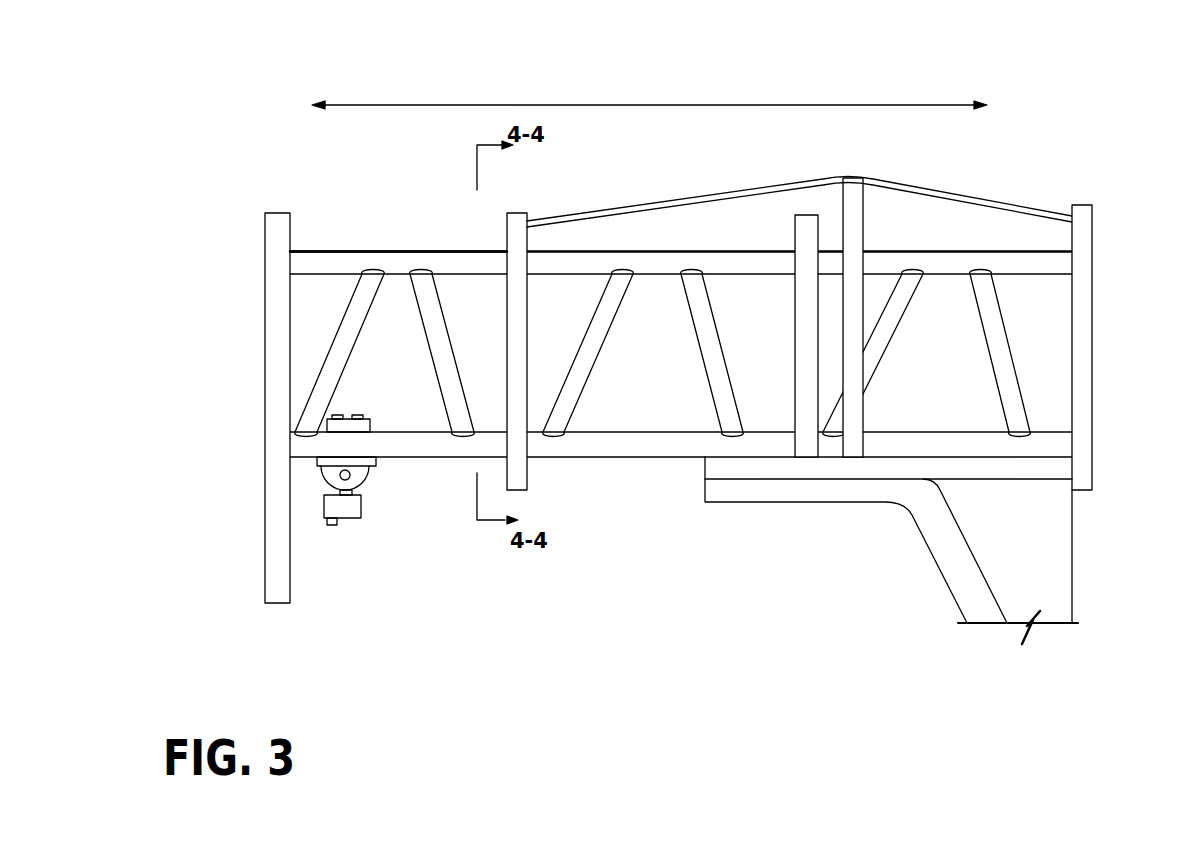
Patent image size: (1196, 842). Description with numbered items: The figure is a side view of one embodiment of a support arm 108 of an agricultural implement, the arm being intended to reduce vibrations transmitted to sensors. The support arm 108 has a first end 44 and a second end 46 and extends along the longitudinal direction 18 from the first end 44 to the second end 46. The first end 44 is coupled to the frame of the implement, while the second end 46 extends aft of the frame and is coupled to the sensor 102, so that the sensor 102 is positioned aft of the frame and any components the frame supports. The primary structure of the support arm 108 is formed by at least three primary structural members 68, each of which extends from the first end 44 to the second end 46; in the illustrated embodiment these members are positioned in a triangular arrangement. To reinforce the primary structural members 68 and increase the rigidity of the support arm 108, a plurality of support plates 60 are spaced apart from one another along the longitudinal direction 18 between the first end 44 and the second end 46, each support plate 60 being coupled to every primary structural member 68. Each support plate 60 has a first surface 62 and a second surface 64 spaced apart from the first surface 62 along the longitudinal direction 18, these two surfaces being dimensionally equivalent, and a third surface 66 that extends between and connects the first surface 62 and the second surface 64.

The support arm 108 is at (238, 105).
The longitudinal direction 18 is at (580, 104).
The first end 44 is at (1104, 185).
The second end 46 is at (361, 208).
The support plate 60 is at (778, 228).
The first surface 62 is at (818, 228).
The second surface 64 is at (527, 240).
The third surface 66 is at (517, 217).
The primary structural member 68 is at (660, 257).
The sensor 102 is at (361, 507).